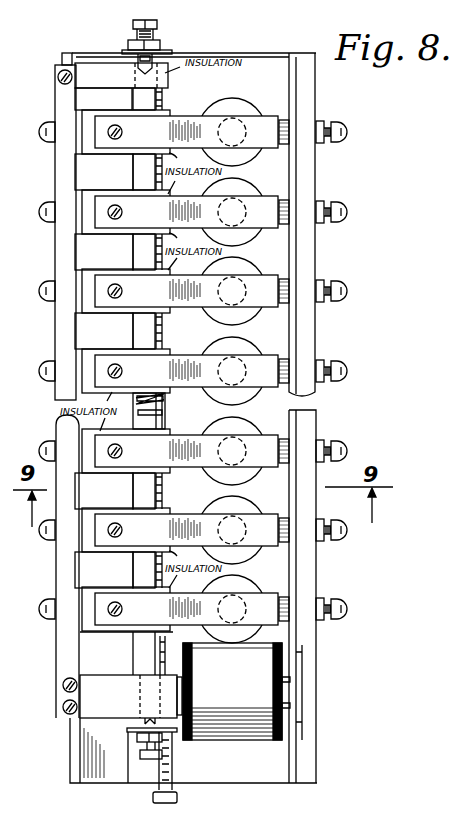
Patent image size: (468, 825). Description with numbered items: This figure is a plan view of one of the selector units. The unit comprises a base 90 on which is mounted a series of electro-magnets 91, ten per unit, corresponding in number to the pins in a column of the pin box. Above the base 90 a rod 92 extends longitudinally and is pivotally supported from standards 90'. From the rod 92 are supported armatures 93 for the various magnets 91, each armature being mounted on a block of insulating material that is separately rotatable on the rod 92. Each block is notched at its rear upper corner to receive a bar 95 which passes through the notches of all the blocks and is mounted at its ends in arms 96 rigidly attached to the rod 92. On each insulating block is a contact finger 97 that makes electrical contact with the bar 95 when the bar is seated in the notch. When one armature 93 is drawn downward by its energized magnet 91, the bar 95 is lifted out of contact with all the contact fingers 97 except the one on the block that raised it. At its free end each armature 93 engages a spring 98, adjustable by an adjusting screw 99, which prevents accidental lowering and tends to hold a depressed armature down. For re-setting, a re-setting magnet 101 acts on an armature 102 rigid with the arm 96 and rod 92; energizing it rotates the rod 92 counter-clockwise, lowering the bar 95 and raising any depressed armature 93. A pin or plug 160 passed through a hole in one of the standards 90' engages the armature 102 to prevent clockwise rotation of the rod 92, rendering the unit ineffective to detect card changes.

The base 90 is at (189, 434).
The standards 90' is at (151, 419).
The electro-magnets 91 is at (240, 110).
The rod 92 is at (165, 407).
The armatures 93 is at (189, 298).
The bar 95 is at (62, 338).
The arms 96 is at (100, 72).
The contact finger 97 is at (53, 207).
The spring 98 is at (284, 278).
The adjusting screw 99 is at (332, 222).
The re-setting magnet 101 is at (232, 733).
The armature 102 is at (173, 672).
The pin or plug 160 is at (178, 792).